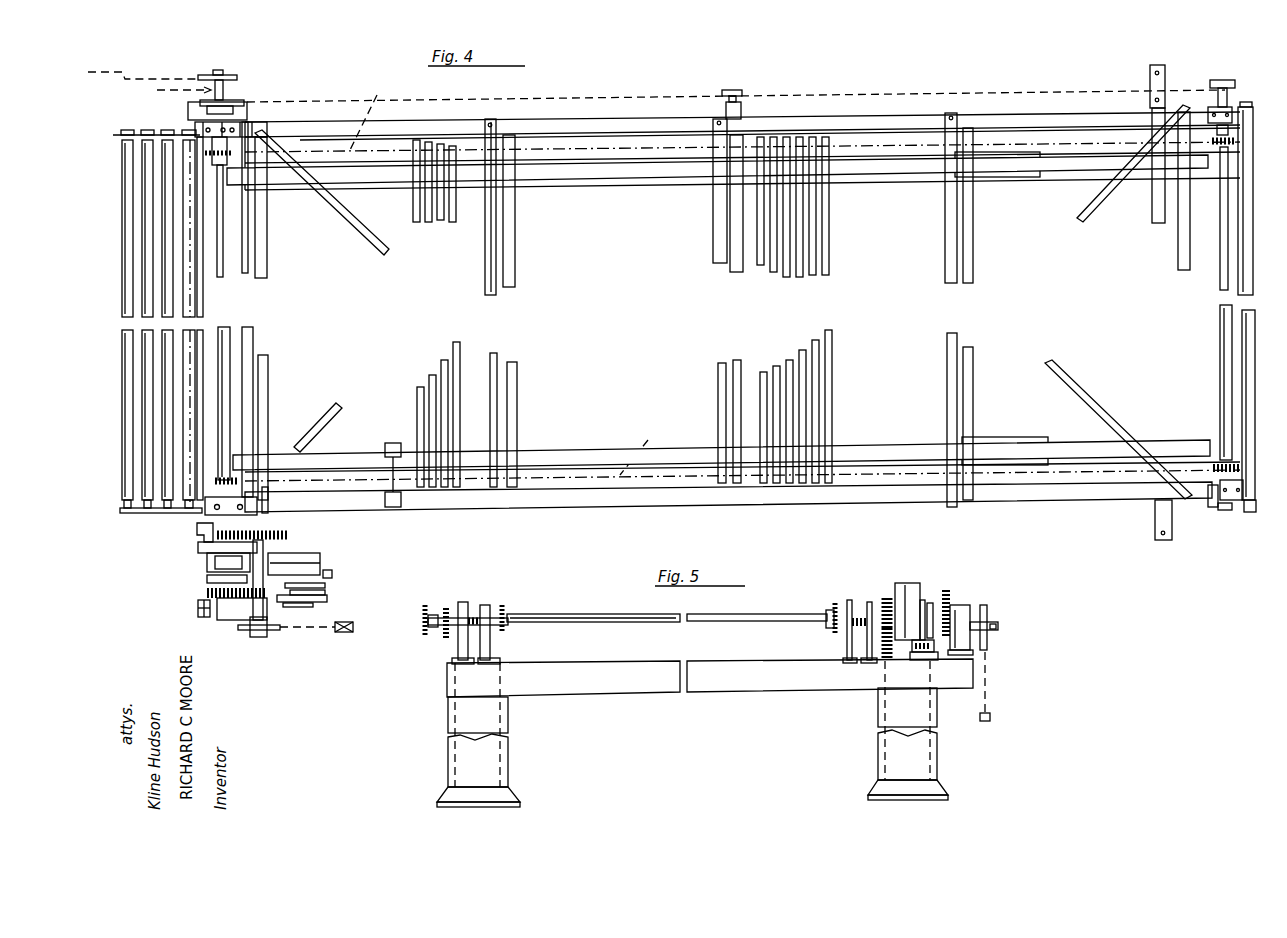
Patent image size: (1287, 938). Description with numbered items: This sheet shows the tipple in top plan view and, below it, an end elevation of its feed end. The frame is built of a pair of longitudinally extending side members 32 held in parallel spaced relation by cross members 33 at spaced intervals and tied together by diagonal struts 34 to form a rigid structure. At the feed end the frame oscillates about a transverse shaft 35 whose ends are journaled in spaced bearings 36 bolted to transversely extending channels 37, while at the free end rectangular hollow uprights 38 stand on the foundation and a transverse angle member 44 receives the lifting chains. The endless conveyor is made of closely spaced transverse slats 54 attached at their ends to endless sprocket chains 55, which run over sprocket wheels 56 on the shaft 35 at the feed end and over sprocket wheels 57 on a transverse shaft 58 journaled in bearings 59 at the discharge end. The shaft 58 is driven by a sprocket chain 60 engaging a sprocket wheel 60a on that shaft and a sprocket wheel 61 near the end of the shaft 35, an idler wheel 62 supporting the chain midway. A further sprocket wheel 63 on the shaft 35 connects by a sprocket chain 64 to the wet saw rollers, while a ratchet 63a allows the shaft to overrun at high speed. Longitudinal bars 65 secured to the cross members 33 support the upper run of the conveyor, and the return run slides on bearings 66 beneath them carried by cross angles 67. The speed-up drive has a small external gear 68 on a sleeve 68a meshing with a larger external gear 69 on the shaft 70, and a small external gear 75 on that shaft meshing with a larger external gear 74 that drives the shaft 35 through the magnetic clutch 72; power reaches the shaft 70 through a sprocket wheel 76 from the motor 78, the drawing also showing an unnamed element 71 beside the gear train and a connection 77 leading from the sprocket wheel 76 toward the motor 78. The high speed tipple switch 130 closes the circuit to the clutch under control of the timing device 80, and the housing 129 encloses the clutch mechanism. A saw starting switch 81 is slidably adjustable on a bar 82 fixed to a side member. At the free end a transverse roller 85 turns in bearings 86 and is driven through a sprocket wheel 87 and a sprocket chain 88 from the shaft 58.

In FIG. 4, the side member 32 is at (583, 118).
In FIG. 5, the side member 32 is at (478, 638).
In FIG. 4, the cross member 33 is at (258, 245).
In FIG. 4, the diagonal strut 34 is at (343, 215).
In FIG. 4, the transverse shaft 35 is at (232, 355).
In FIG. 5, the transverse shaft 35 is at (575, 613).
In FIG. 4, the bearing 36 is at (250, 120).
In FIG. 5, the bearing 36 is at (463, 602).
In FIG. 5, the channel 37 is at (562, 690).
In FIG. 5, the hollow upright 38 is at (925, 760).
In FIG. 4, the transverse angle member 44 is at (1172, 528).
In FIG. 4, the slat 54 is at (832, 225).
In FIG. 4, the endless sprocket chain 55 is at (742, 279).
In FIG. 4, the sprocket wheel 56 is at (218, 478).
In FIG. 5, the sprocket wheel 56 is at (505, 604).
In FIG. 4, the sprocket wheel 57 is at (1240, 465).
In FIG. 4, the transverse shaft 58 is at (1232, 375).
In FIG. 4, the bearing 59 is at (1210, 112).
In FIG. 4, the sprocket chain 60 is at (870, 95).
In FIG. 4, the sprocket wheel 60a is at (1230, 80).
In FIG. 4, the sprocket wheel 61 is at (232, 100).
In FIG. 5, the sprocket wheel 61 is at (445, 606).
In FIG. 4, the idler wheel 62 is at (735, 88).
In FIG. 4, the sprocket wheel 63 is at (222, 72).
In FIG. 5, the sprocket wheel 63 is at (424, 635).
In FIG. 4, the ratchet 63a is at (179, 90).
In FIG. 4, the sprocket chain 64 is at (168, 78).
In FIG. 4, the longitudinal bar 65 is at (578, 176).
In FIG. 4, the bearing 66 is at (1008, 175).
In FIG. 4, the cross angle 67 is at (512, 270).
In FIG. 4, the external gear 68 is at (197, 530).
In FIG. 4, the sleeve 68a is at (198, 546).
In FIG. 4, the external gear 69 is at (264, 530).
In FIG. 4, the shaft 70 is at (264, 547).
In FIG. 4, the bearing 71 is at (210, 612).
In FIG. 5, the bearing 71 is at (968, 608).
In FIG. 4, the magnetic clutch 72 is at (210, 563).
In FIG. 5, the magnetic clutch 72 is at (912, 592).
In FIG. 4, the external gear 74 is at (207, 598).
In FIG. 5, the external gear 74 is at (950, 600).
In FIG. 4, the external gear 75 is at (270, 600).
In FIG. 4, the sprocket wheel 76 is at (245, 630).
In FIG. 5, the sprocket wheel 76 is at (988, 613).
In FIG. 4, the drive line 77 is at (310, 628).
In FIG. 5, the drive line 77 is at (987, 672).
In FIG. 4, the motor 78 is at (344, 633).
In FIG. 5, the motor 78 is at (1001, 711).
In FIG. 4, the timing device 80 is at (322, 565).
In FIG. 4, the saw starting switch 81 is at (396, 508).
In FIG. 4, the bar 82 is at (578, 498).
In FIG. 4, the roller 85 is at (1253, 228).
In FIG. 4, the bearing 86 is at (1247, 102).
In FIG. 4, the sprocket wheel 87 is at (1225, 510).
In FIG. 4, the sprocket chain 88 is at (1250, 512).
In FIG. 4, the housing 129 is at (300, 605).
In FIG. 4, the high speed tipple switch 130 is at (325, 590).